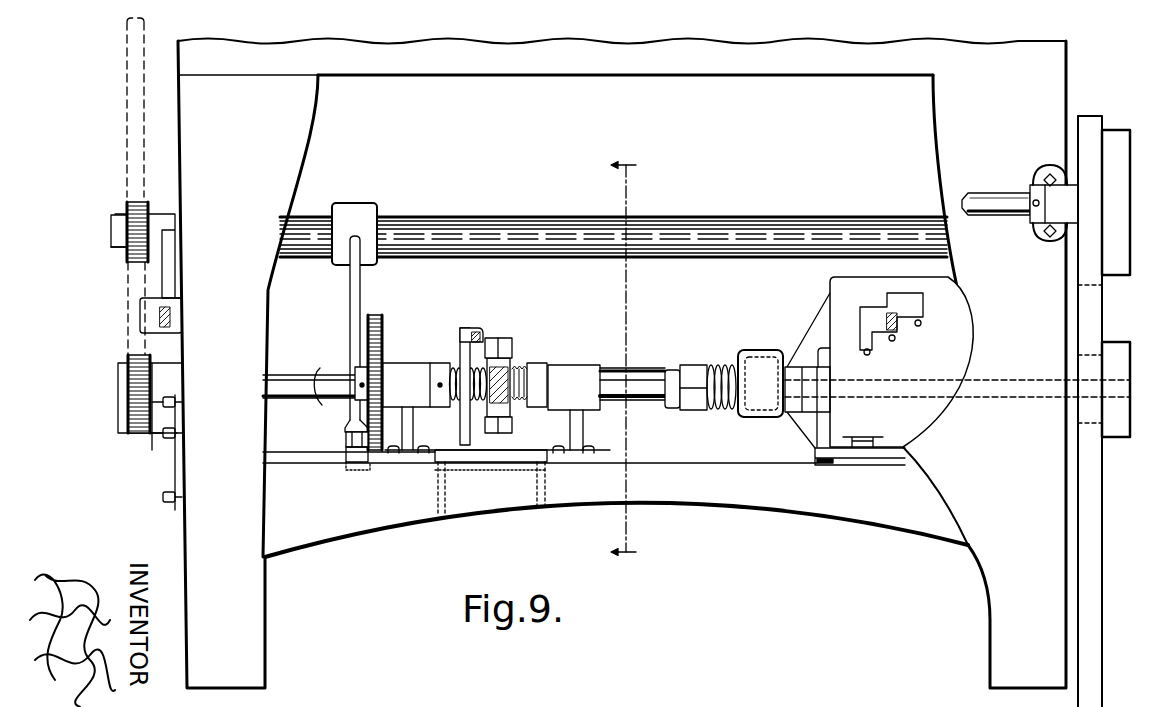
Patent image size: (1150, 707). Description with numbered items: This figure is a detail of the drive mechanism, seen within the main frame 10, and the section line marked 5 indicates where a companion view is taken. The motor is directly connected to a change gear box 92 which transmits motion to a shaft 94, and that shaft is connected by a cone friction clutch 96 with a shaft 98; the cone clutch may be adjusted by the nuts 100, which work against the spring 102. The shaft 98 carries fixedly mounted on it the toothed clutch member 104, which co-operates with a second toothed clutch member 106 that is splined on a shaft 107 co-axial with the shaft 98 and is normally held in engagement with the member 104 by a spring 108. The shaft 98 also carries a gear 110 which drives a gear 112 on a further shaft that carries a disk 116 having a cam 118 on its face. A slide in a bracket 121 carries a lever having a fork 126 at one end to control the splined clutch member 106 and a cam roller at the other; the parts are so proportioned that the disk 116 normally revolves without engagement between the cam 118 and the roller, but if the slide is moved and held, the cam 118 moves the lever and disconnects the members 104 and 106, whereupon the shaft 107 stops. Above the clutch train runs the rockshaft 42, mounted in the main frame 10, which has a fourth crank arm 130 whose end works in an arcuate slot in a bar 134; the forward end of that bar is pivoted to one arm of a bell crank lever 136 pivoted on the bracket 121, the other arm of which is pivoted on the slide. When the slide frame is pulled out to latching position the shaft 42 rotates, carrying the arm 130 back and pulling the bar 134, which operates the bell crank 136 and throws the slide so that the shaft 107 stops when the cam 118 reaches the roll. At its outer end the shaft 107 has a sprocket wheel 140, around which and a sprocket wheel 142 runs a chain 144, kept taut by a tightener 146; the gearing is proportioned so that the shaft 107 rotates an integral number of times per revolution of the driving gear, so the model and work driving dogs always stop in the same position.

The frame 10 is at (654, 373).
The rockshaft 42 is at (500, 232).
The change gear box 92 is at (879, 371).
The shaft 94 is at (812, 390).
The cone friction clutch 96 is at (762, 368).
The shaft 98 is at (640, 377).
The nuts 100 is at (697, 396).
The spring 102 is at (718, 366).
The toothed clutch member 104 is at (518, 380).
The toothed clutch member 106 is at (504, 368).
The shaft 107 is at (303, 383).
The spring 108 is at (470, 380).
The gear 110 is at (385, 370).
The gear 112 is at (383, 324).
The disk 116 is at (467, 328).
The cam 118 is at (474, 330).
The bracket 121 is at (498, 467).
The fork 126 is at (508, 414).
The fourth crank arm 130 is at (358, 275).
The bar 134 is at (349, 445).
The bell crank lever 136 is at (350, 458).
The sprocket wheel 140 is at (133, 388).
The sprocket wheel 142 is at (167, 492).
The chain 144 is at (140, 152).
The tightener 146 is at (117, 220).
The section line 5 is at (630, 360).